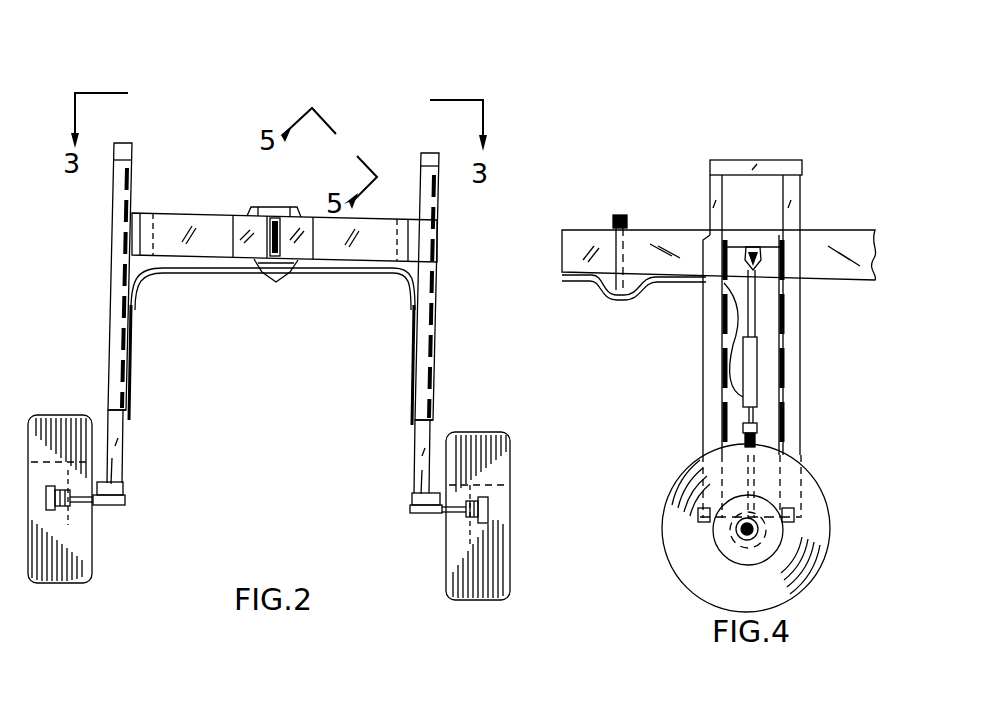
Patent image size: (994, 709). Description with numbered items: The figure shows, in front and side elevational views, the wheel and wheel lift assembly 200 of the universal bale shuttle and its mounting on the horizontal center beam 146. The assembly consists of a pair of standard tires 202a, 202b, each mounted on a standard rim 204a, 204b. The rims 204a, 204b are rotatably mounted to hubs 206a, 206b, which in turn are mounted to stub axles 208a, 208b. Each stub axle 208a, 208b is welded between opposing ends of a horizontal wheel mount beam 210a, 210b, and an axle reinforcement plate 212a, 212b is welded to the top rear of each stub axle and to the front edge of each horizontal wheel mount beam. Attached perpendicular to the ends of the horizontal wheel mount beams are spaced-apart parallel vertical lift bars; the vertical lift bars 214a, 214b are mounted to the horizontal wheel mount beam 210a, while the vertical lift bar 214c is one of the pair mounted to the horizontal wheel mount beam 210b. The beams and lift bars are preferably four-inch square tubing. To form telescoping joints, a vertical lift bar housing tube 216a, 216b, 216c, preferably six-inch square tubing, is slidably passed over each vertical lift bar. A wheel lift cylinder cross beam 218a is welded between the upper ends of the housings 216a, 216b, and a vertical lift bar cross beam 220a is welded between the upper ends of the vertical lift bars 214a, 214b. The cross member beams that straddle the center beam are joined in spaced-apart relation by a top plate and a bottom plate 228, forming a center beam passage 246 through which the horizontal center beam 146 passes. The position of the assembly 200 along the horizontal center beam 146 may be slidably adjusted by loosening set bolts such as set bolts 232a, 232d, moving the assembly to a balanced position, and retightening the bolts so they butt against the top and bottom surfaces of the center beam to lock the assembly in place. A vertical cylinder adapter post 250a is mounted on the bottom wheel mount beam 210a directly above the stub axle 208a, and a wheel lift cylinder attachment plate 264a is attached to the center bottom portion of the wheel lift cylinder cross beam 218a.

In FIG. 2, the wheel and wheel lift assembly 200 is at (302, 72).
In FIG. 4, the wheel and wheel lift assembly 200 is at (792, 62).
In FIG. 2, the horizontal center beam 146 is at (298, 252).
In FIG. 4, the horizontal center beam 146 is at (577, 233).
In FIG. 2, the tire 202a is at (40, 445).
In FIG. 4, the tire 202a is at (722, 590).
In FIG. 2, the tire 202b is at (507, 439).
In FIG. 2, the rim 204a is at (38, 508).
In FIG. 4, the rim 204a is at (728, 557).
In FIG. 2, the rim 204b is at (495, 490).
In FIG. 2, the hub 206a is at (100, 522).
In FIG. 2, the hub 206b is at (445, 535).
In FIG. 2, the stub axle 208a is at (108, 510).
In FIG. 2, the stub axle 208b is at (438, 520).
In FIG. 2, the horizontal wheel mount beam 210a is at (120, 480).
In FIG. 2, the horizontal wheel mount beam 210b is at (413, 491).
In FIG. 2, the axle reinforcement plate 212a is at (113, 464).
In FIG. 2, the axle reinforcement plate 212b is at (424, 486).
In FIG. 2, the vertical lift bar 214a is at (118, 418).
In FIG. 4, the vertical lift bar 214a is at (706, 452).
In FIG. 4, the vertical lift bar 214b is at (796, 458).
In FIG. 2, the vertical lift bar 214c is at (416, 442).
In FIG. 2, the vertical lift bar housing tube 216a is at (134, 320).
In FIG. 4, the vertical lift bar housing tube 216a is at (712, 362).
In FIG. 4, the vertical lift bar housing tube 216b is at (801, 334).
In FIG. 2, the vertical lift bar housing tube 216c is at (420, 347).
In FIG. 4, the wheel lift cylinder cross beam 218a is at (762, 237).
In FIG. 4, the vertical lift bar cross beam 220a is at (736, 166).
In FIG. 2, the bottom plate 228 is at (268, 270).
In FIG. 4, the set bolt 232a is at (620, 214).
In FIG. 2, the set bolt 232d is at (274, 216).
In FIG. 2, the center beam passage 246 is at (238, 215).
In FIG. 4, the vertical cylinder adapter post 250a is at (736, 541).
In FIG. 4, the wheel lift cylinder attachment plate 264a is at (755, 247).